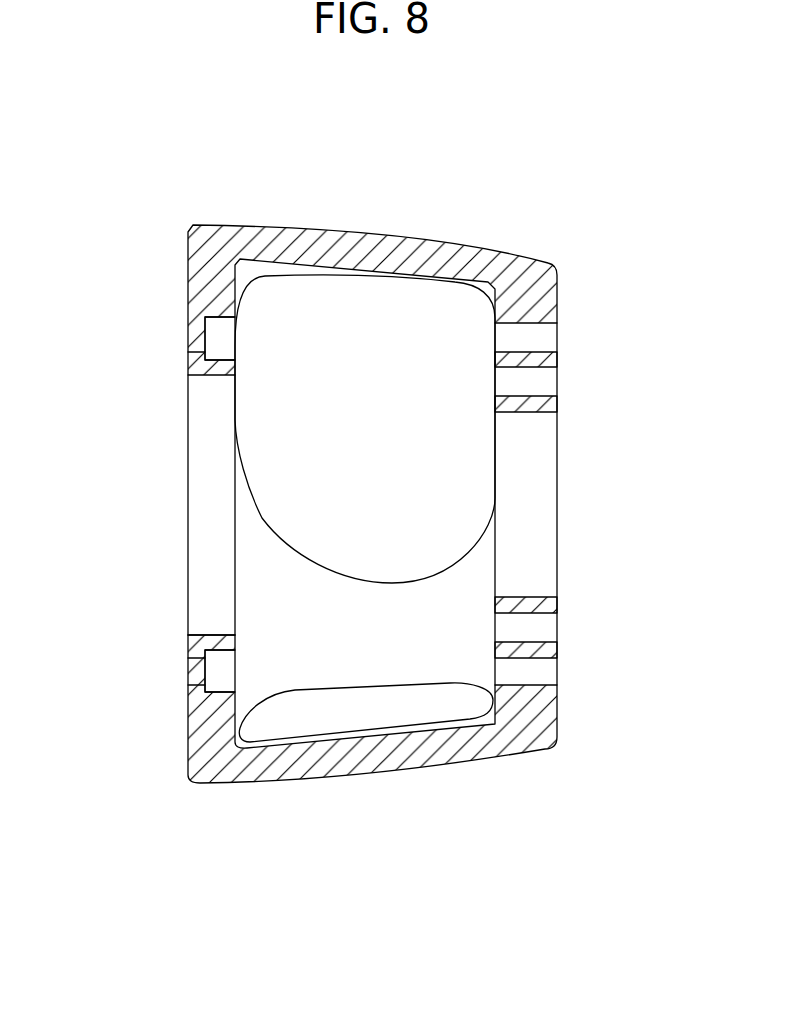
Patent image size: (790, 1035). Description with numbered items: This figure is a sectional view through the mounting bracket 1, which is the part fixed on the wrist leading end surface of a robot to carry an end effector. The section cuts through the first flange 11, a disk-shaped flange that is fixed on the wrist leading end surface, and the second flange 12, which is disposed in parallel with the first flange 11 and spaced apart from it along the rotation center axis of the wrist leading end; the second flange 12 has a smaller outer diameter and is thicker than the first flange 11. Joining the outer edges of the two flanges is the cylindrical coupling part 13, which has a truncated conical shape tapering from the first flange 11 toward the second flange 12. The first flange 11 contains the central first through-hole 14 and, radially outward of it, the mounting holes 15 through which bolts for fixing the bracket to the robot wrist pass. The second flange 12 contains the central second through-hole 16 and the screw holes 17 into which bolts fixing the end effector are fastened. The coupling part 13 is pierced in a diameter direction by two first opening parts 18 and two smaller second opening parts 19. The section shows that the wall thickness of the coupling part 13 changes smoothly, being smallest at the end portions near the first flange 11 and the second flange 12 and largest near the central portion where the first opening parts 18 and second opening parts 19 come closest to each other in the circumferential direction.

The mounting bracket 1 is at (140, 135).
The first flange 11 is at (166, 484).
The second flange 12 is at (578, 491).
The coupling part 13 is at (365, 794).
The first through-hole 14 is at (199, 635).
The mounting holes 15 is at (205, 326).
The second through-hole 16 is at (542, 597).
The screw holes 17 is at (530, 323).
The first opening parts 18 is at (303, 551).
The second opening parts 19 is at (308, 741).